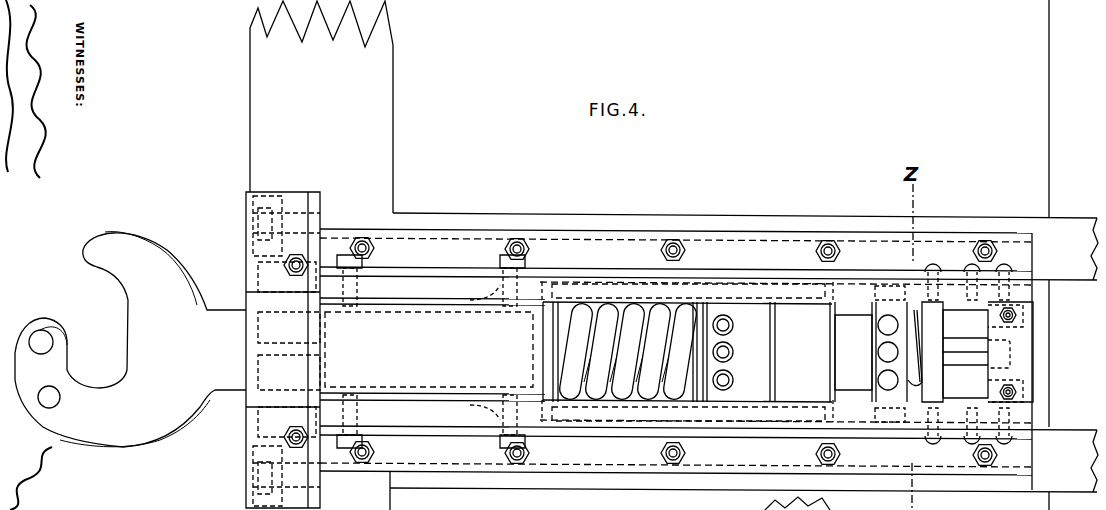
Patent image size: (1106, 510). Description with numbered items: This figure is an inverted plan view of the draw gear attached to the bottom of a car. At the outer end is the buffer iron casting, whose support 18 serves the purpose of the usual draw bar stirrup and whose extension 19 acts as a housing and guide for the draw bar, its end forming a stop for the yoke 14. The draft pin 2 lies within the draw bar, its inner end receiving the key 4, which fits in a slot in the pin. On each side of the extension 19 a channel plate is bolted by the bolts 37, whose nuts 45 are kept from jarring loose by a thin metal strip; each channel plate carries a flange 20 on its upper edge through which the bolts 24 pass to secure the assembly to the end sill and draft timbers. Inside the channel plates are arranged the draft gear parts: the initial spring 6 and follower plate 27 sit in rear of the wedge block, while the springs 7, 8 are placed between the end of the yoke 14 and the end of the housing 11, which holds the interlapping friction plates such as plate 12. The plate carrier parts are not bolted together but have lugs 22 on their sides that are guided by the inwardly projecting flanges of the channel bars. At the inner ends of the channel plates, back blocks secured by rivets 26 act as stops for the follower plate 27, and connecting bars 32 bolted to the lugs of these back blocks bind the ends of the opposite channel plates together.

The draft pin 2 is at (969, 346).
The key 4 is at (975, 356).
The initial spring 6 is at (923, 353).
The spring 7 is at (689, 365).
The spring 8 is at (633, 352).
The housing 11 is at (739, 352).
The plate 12 is at (871, 352).
The yoke 14 is at (553, 357).
The support 18 is at (283, 350).
The extension 19 is at (432, 349).
The flange 20 is at (709, 361).
The lugs 22 is at (786, 354).
The bolts 24 is at (841, 257).
The rivets 26 is at (937, 262).
The follower plate 27 is at (932, 352).
The connecting bars 32 is at (1017, 352).
The bolts 37 is at (366, 263).
The nuts 45 is at (500, 262).